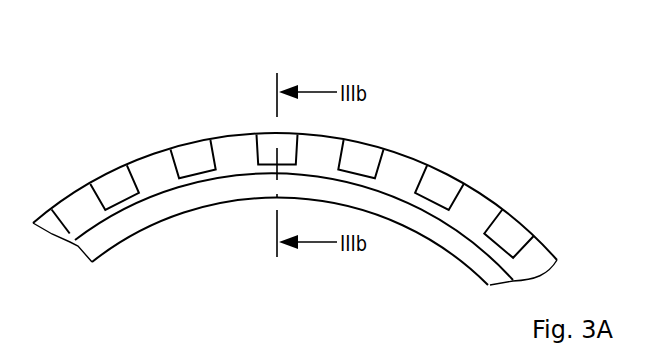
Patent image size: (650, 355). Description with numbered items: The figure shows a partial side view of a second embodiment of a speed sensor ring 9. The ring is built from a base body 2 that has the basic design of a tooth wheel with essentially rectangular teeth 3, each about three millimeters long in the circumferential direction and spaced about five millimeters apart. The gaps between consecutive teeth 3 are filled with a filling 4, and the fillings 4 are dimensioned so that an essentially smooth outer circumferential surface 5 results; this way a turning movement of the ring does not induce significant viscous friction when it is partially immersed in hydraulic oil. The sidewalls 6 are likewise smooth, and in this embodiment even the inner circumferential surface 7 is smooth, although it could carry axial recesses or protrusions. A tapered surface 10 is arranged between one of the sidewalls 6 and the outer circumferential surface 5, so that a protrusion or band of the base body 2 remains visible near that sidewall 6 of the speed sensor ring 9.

The base body 2 is at (178, 224).
The rectangular teeth 3 is at (150, 162).
The filling 4 is at (112, 187).
The outer circumferential surface 5 is at (414, 155).
The sidewall 6 is at (470, 246).
The inner circumferential surface 7 is at (423, 235).
The speed sensor ring 9 is at (518, 143).
The tapered surface 10 is at (473, 221).